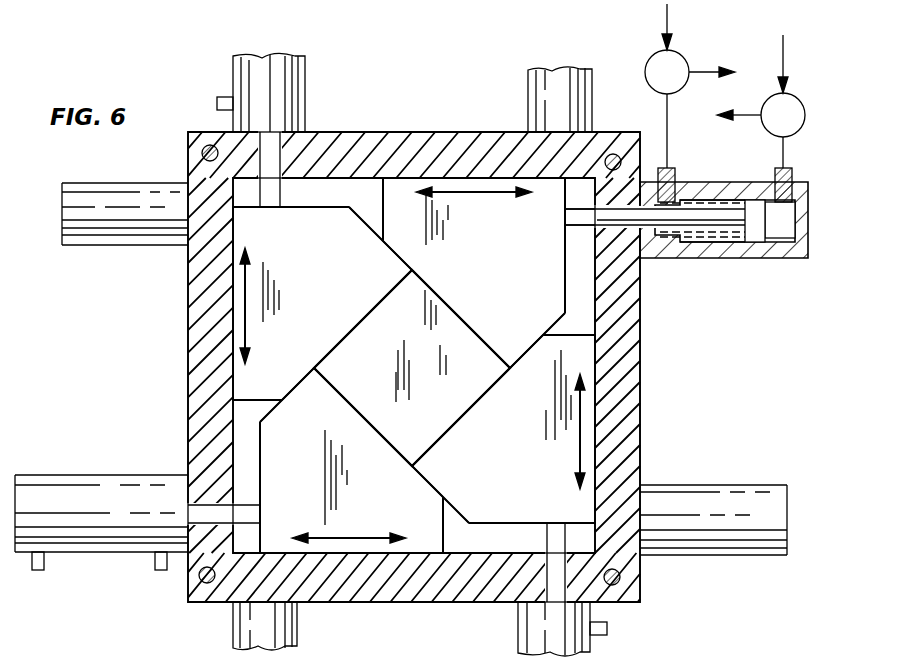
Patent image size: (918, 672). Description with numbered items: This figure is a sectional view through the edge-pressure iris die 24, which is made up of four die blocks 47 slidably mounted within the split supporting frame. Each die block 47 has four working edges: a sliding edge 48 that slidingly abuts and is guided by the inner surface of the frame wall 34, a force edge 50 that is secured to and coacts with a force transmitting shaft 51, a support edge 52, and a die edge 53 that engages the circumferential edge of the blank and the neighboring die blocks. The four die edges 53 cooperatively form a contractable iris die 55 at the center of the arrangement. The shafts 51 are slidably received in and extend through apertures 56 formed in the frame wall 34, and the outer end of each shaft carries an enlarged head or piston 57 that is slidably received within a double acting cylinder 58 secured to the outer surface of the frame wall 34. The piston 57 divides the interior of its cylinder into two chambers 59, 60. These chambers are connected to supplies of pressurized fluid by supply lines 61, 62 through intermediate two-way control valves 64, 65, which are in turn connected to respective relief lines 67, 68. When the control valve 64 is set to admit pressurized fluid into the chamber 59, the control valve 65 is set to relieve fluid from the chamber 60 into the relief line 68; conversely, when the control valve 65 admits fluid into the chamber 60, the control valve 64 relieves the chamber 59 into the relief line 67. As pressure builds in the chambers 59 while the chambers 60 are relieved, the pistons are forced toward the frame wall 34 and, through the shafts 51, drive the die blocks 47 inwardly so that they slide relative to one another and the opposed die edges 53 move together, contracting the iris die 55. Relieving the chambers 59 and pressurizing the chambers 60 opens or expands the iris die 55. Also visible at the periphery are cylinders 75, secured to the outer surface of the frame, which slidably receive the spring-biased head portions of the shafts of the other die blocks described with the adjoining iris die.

The edge-pressure iris die 24 is at (668, 419).
The frame wall 34 is at (344, 160).
The die blocks 47 is at (283, 326).
The sliding edge 48 is at (414, 174).
The force edge 50 is at (326, 208).
The force transmitting shaft 51 is at (250, 206).
The support edge 52 is at (374, 217).
The die edge 53 is at (334, 358).
The contractable iris die 55 is at (398, 349).
The apertures 56 is at (626, 242).
The piston 57 is at (757, 200).
The double acting cylinder 58 is at (232, 72).
The cylinder chamber 59 is at (781, 233).
The cylinder chamber 60 is at (709, 240).
The supply line 61 is at (788, 153).
The supply line 62 is at (664, 117).
The two-way control valve 64 is at (800, 107).
The two-way control valve 65 is at (652, 60).
The relief line 67 is at (748, 119).
The relief line 68 is at (702, 71).
The cylinder 75 is at (528, 78).